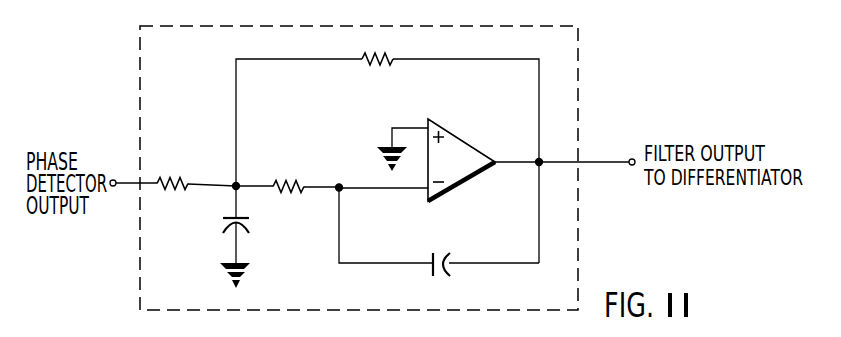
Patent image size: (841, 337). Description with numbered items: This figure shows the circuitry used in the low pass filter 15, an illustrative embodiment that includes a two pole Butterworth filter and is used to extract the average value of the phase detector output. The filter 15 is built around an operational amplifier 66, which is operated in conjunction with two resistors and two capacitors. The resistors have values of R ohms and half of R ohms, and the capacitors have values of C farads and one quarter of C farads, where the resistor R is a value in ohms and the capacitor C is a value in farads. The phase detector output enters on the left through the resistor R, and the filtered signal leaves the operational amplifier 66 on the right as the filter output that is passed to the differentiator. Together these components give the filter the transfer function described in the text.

The low pass filter 15 is at (190, 92).
The operational amplifier 66 is at (468, 143).
The resistor R is at (172, 168).
The capacitor C is at (244, 225).